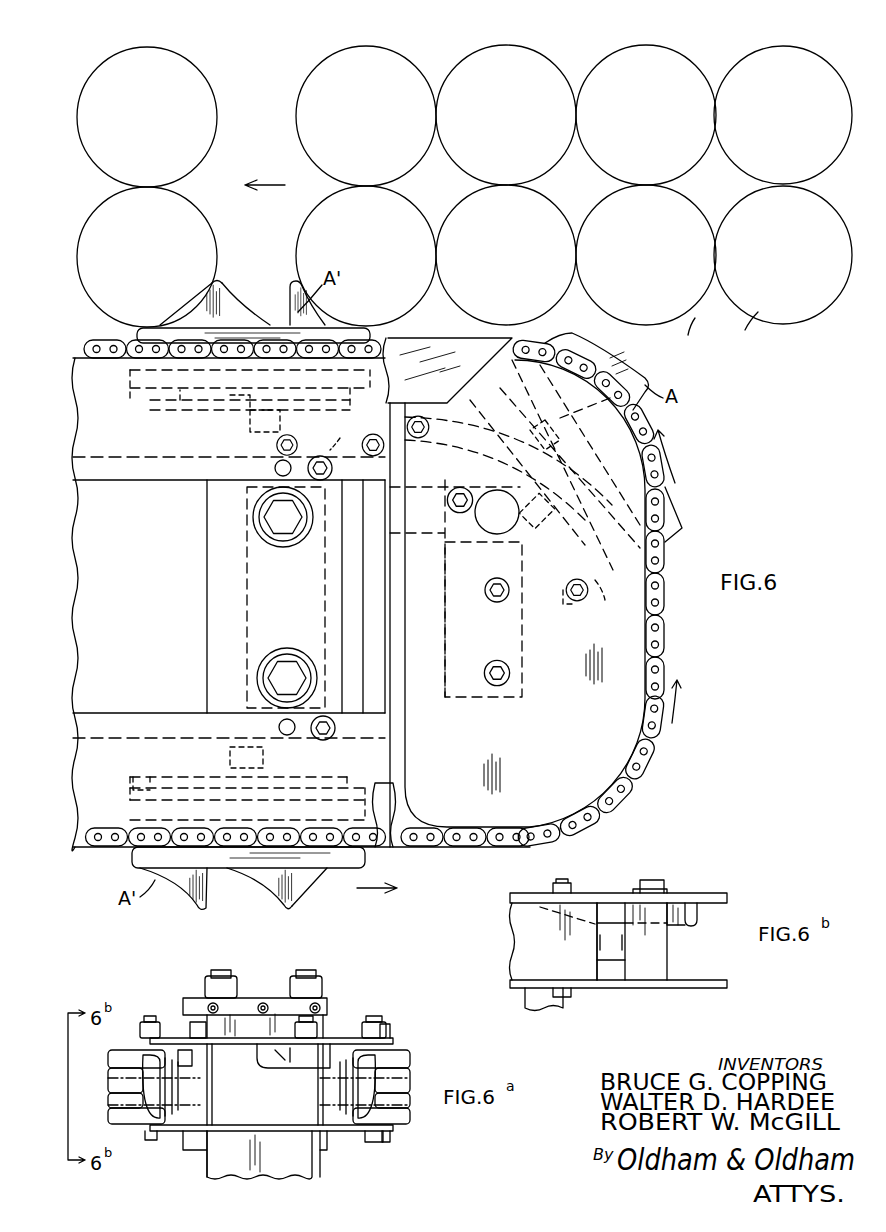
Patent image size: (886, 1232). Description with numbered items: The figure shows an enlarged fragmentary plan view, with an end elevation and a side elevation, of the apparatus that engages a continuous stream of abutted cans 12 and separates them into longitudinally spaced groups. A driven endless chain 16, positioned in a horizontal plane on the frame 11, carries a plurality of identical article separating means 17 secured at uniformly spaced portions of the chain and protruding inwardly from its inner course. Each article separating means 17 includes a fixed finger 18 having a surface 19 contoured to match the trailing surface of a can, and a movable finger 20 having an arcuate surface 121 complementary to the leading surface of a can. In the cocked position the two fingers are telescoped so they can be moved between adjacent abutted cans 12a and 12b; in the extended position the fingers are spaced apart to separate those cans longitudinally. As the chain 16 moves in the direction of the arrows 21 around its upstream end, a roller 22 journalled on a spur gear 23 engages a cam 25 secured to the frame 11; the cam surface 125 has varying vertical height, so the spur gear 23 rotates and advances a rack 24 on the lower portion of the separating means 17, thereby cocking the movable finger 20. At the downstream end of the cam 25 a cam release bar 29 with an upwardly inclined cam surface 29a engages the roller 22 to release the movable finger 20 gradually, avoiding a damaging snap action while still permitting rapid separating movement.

In FIG. 6a, the frame 11 is at (275, 1128).
In FIG. 6, the cans 12 is at (98, 205).
In FIG. 6, the can 12a is at (700, 312).
In FIG. 6, the can 12b is at (752, 334).
In FIG. 6, the endless chain means 16 is at (658, 636).
In FIG. 6a, the endless chain means 16 is at (392, 1042).
In FIG. 6, the article separating means 17 is at (260, 308).
In FIG. 6a, the article separating means 17 is at (102, 1106).
In FIG. 6, the finger 18 is at (222, 305).
In FIG. 6a, the finger 18 is at (110, 1058).
In FIG. 6, the surface 19 is at (192, 315).
In FIG. 6, the movable finger 20 is at (315, 310).
In FIG. 6a, the movable finger 20 is at (108, 1080).
In FIG. 6, the arrows 21 is at (668, 455).
In FIG. 6, the roller 22 is at (248, 432).
In FIG. 6a, the roller 22 is at (192, 1060).
In FIG. 6, the spur gear 23 is at (215, 400).
In FIG. 6, the rack 24 is at (167, 780).
In FIG. 6, the cam 25 is at (597, 590).
In FIG. 6b, the cam 25 is at (697, 913).
In FIG. 6a, the cam 25 is at (285, 1068).
In FIG. 6, the cam release bar 29 is at (340, 434).
In FIG. 6b, the cam release bar 29 is at (600, 905).
In FIG. 6b, the upwardly inclined cam surface 29a is at (572, 914).
In FIG. 6, the arcuate surface 121 is at (648, 400).
In FIG. 6b, the cam surface 125 is at (688, 928).
In FIG. 6a, the cam surface 125 is at (262, 1064).